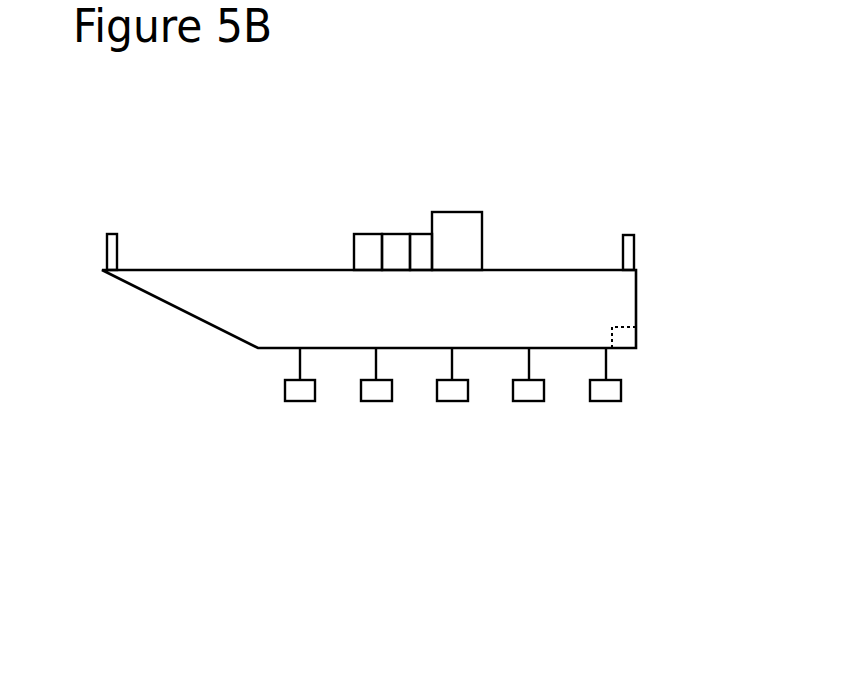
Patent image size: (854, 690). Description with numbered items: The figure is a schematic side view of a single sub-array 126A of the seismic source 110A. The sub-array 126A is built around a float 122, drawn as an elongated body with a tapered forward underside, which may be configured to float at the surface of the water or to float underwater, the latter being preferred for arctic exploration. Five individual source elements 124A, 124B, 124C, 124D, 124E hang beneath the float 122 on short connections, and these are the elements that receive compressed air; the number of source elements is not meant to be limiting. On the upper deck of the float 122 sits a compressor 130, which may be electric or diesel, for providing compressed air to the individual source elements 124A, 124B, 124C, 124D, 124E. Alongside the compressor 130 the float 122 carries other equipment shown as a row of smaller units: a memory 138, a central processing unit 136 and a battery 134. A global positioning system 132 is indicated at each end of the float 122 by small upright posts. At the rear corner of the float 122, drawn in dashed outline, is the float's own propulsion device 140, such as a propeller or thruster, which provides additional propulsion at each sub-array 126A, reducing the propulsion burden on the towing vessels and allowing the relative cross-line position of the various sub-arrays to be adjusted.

The seismic source 110A is at (448, 53).
The float 122 is at (620, 299).
The global positioning system (GPS) 132 is at (112, 238).
The memory 138 is at (368, 240).
The central processing unit (CPU) 136 is at (395, 245).
The battery 134 is at (420, 240).
The compressor 130 is at (460, 218).
The propulsion device 140 is at (628, 335).
The individual source element 124A is at (298, 396).
The individual source element 124B is at (378, 392).
The individual source element 124C is at (452, 374).
The individual source element 124D is at (528, 374).
The individual source element 124E is at (605, 392).
The sub-array 126A is at (222, 506).